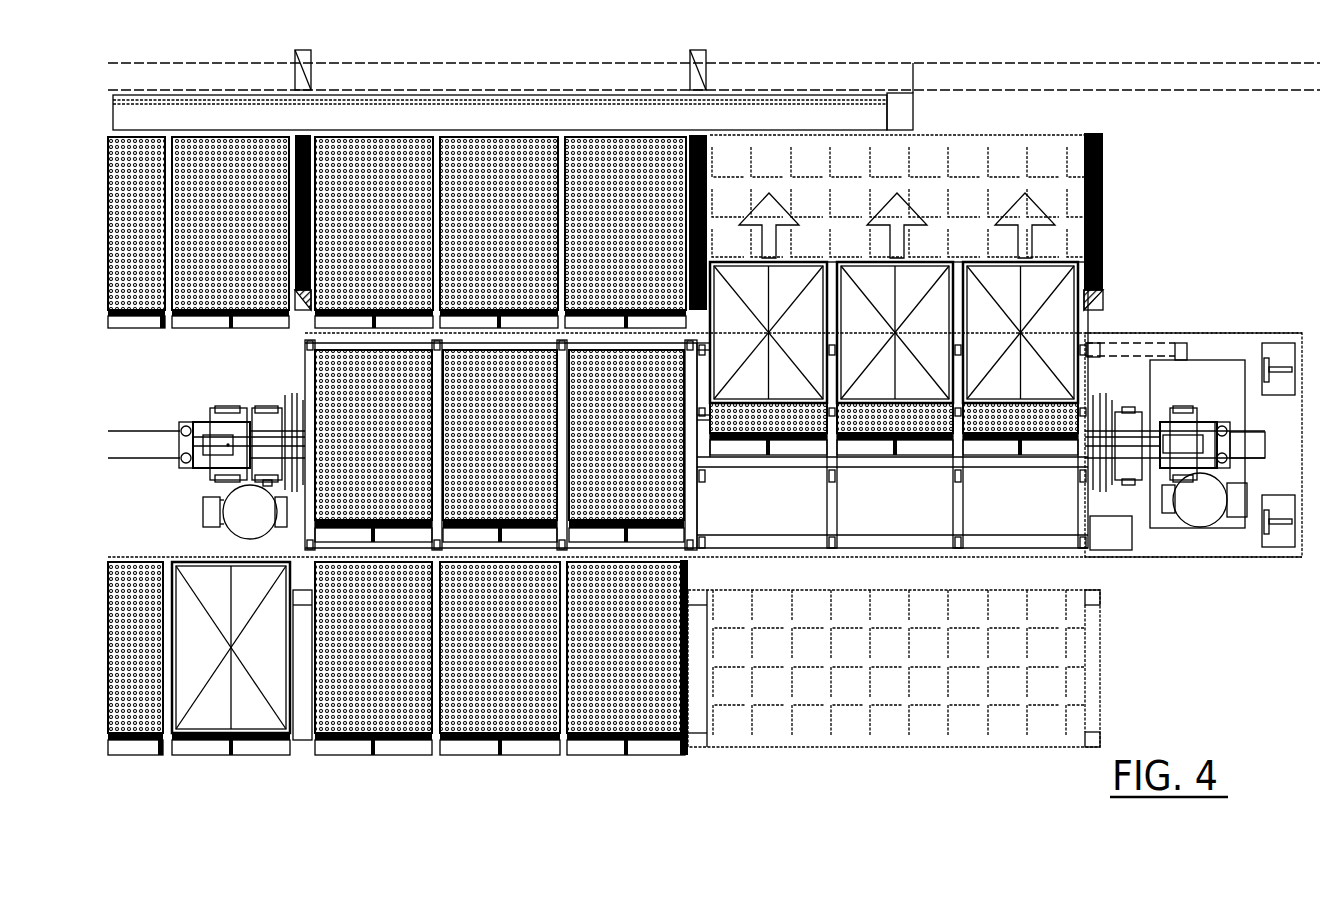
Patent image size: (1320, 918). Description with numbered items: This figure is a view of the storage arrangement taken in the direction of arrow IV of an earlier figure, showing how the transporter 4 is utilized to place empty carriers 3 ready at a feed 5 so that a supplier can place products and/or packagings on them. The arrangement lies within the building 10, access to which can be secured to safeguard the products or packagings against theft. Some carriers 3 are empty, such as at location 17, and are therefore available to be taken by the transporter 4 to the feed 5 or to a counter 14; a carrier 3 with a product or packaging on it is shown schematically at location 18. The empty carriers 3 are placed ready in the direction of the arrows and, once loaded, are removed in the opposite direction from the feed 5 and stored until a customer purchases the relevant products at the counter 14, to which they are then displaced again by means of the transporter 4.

The carrier 3 is at (775, 363).
The transporter 4 is at (1105, 567).
The feed 5 is at (1112, 213).
The building 10 is at (889, 76).
The counter 14 is at (328, 98).
The location 17 is at (196, 622).
The location 18 is at (213, 156).